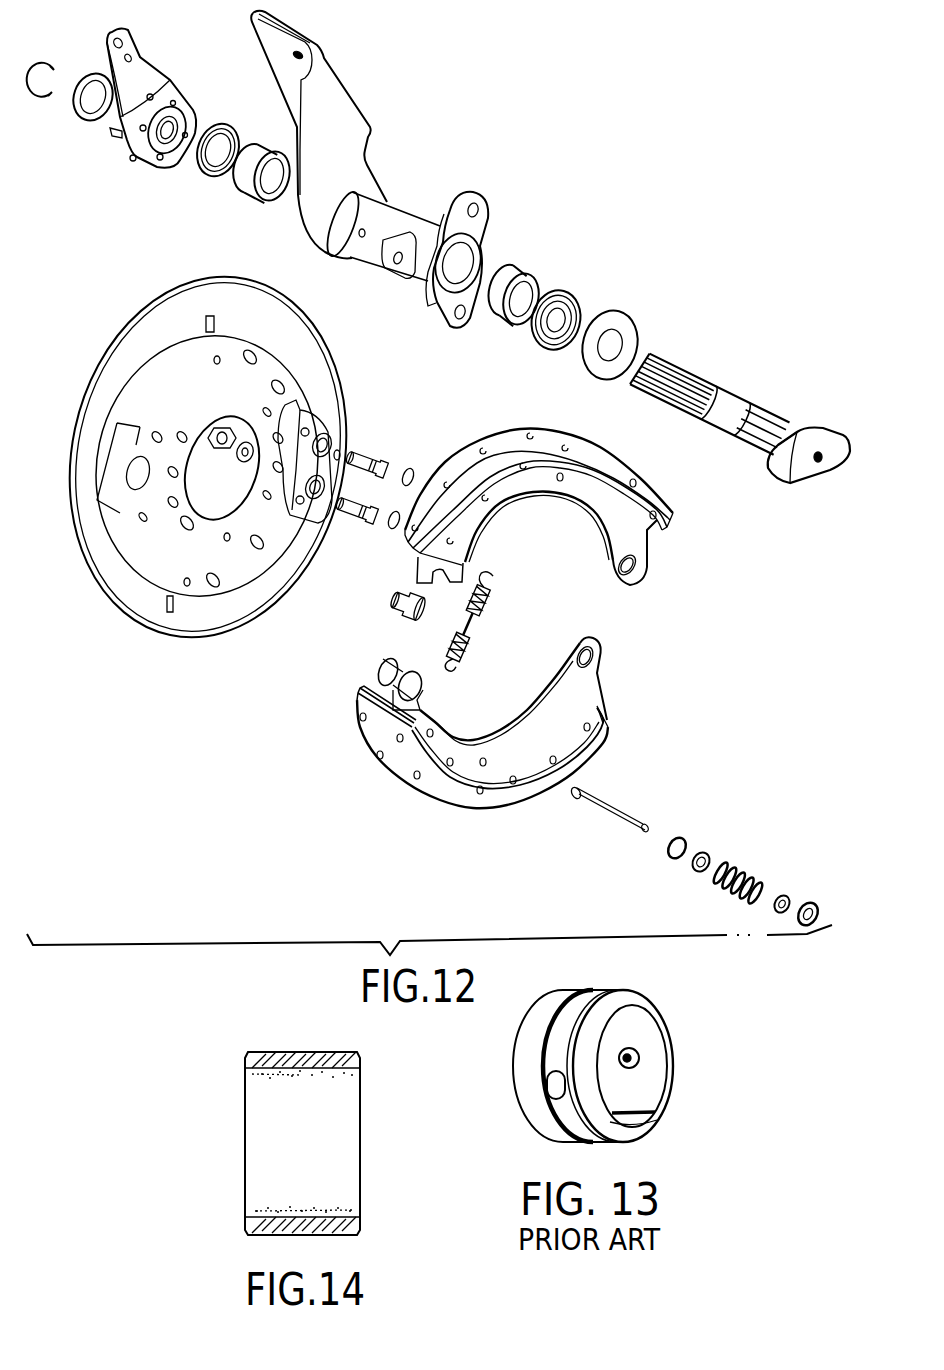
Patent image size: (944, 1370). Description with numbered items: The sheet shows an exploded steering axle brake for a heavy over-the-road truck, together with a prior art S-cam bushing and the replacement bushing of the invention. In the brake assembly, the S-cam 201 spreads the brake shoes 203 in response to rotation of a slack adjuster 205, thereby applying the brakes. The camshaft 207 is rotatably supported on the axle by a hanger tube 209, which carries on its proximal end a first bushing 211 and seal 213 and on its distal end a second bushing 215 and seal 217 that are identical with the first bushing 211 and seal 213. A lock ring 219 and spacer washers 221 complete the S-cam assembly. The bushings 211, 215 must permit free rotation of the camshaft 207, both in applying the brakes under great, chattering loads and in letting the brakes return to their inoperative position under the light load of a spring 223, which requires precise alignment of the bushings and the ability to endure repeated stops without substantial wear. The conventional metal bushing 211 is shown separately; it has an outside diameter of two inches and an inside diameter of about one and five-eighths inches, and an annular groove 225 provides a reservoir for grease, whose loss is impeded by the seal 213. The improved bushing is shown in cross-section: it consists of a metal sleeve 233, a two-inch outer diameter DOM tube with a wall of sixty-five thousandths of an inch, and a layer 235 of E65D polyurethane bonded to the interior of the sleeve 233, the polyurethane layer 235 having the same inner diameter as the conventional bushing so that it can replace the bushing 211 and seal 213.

In FIG. 12, the S-cam 201 is at (840, 410).
In FIG. 12, the brake shoes 203 is at (617, 518).
In FIG. 12, the slack adjuster 205 is at (144, 76).
In FIG. 12, the camshaft 207 is at (707, 388).
In FIG. 12, the hanger tube 209 is at (384, 200).
In FIG. 12, the first bushing 211 is at (283, 132).
In FIG. 13, the first bushing 211 is at (672, 1026).
In FIG. 12, the seal 213 is at (244, 100).
In FIG. 12, the second bushing 215 is at (520, 266).
In FIG. 12, the seal 217 is at (572, 293).
In FIG. 12, the lock ring 219 is at (75, 44).
In FIG. 12, the spacer washers 221 is at (75, 112).
In FIG. 12, the spring 223 is at (490, 600).
In FIG. 13, the annular groove 225 is at (590, 995).
In FIG. 14, the metal sleeve 233 is at (298, 1052).
In FIG. 14, the polyurethane layer 235 is at (257, 1072).